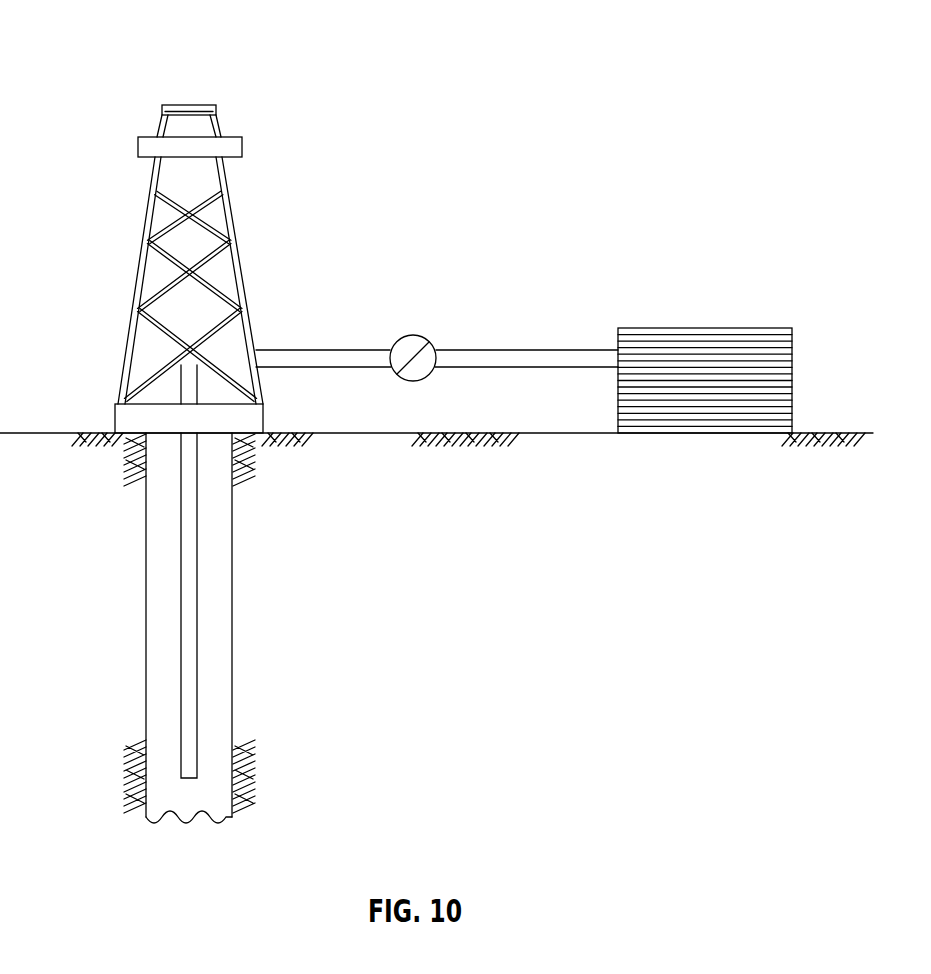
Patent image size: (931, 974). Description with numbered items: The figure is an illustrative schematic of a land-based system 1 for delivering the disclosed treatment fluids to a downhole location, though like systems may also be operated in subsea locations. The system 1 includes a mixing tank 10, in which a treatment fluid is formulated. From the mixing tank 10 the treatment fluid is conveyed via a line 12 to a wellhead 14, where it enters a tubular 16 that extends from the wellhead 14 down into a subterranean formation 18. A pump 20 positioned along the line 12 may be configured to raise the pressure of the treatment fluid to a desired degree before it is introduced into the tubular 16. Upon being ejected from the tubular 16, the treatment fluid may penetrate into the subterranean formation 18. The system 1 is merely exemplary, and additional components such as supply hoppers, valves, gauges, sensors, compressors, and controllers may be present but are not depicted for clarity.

The system 1 is at (110, 84).
The mixing tank 10 is at (747, 328).
The line 12 is at (328, 350).
The wellhead 14 is at (115, 418).
The tubular 16 is at (197, 542).
The subterranean formation 18 is at (73, 642).
The pump 20 is at (413, 335).